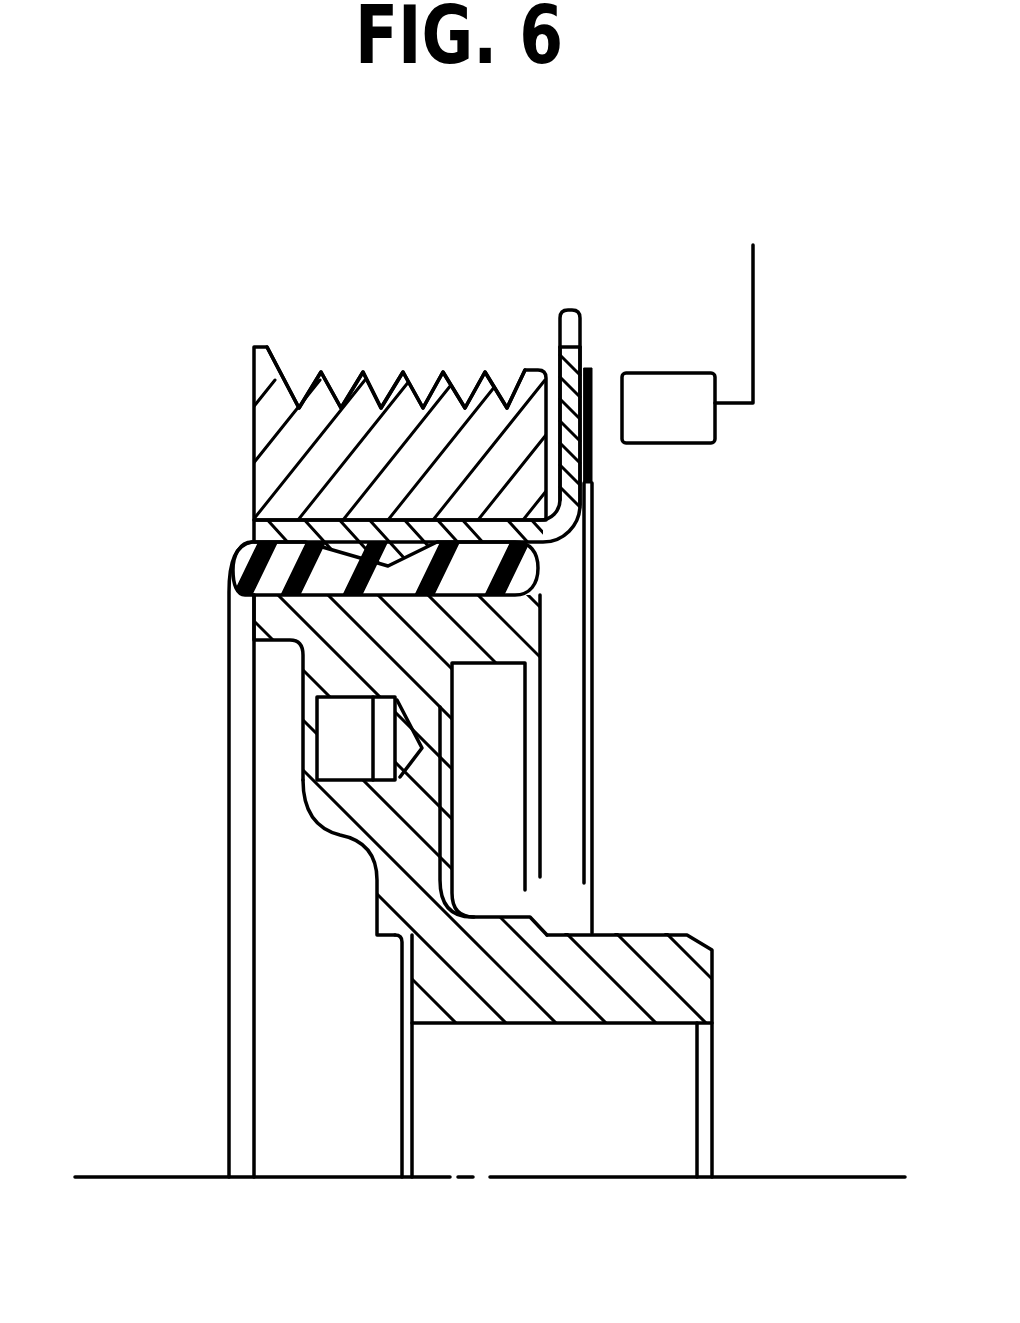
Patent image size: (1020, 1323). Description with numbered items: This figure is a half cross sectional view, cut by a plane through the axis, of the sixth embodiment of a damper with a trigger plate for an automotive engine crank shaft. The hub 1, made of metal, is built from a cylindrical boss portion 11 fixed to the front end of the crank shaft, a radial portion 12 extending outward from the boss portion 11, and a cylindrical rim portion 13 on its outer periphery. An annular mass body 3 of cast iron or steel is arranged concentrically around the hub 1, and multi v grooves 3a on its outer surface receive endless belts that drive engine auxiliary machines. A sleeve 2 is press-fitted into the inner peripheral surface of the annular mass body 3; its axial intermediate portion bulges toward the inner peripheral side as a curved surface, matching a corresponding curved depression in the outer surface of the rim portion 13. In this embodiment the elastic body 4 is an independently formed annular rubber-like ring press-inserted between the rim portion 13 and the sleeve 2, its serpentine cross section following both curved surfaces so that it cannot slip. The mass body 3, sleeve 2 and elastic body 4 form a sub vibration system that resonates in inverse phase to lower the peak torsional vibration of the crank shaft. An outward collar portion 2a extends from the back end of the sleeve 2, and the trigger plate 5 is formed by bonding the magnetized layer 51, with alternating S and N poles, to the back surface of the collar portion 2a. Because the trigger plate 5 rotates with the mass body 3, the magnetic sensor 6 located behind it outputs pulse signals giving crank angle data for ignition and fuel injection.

The hub 1 is at (643, 938).
The boss portion 11 is at (682, 978).
The radial portion 12 is at (377, 808).
The rim portion 13 is at (323, 613).
The sleeve 2 is at (270, 528).
The outward collar portion 2a is at (572, 418).
The annular mass body 3 is at (253, 361).
The multi v grooves 3a is at (383, 378).
The elastic body 4 is at (267, 572).
The trigger plate 5 is at (572, 312).
The magnetized layer 51 is at (587, 435).
The magnetic sensor 6 is at (673, 387).